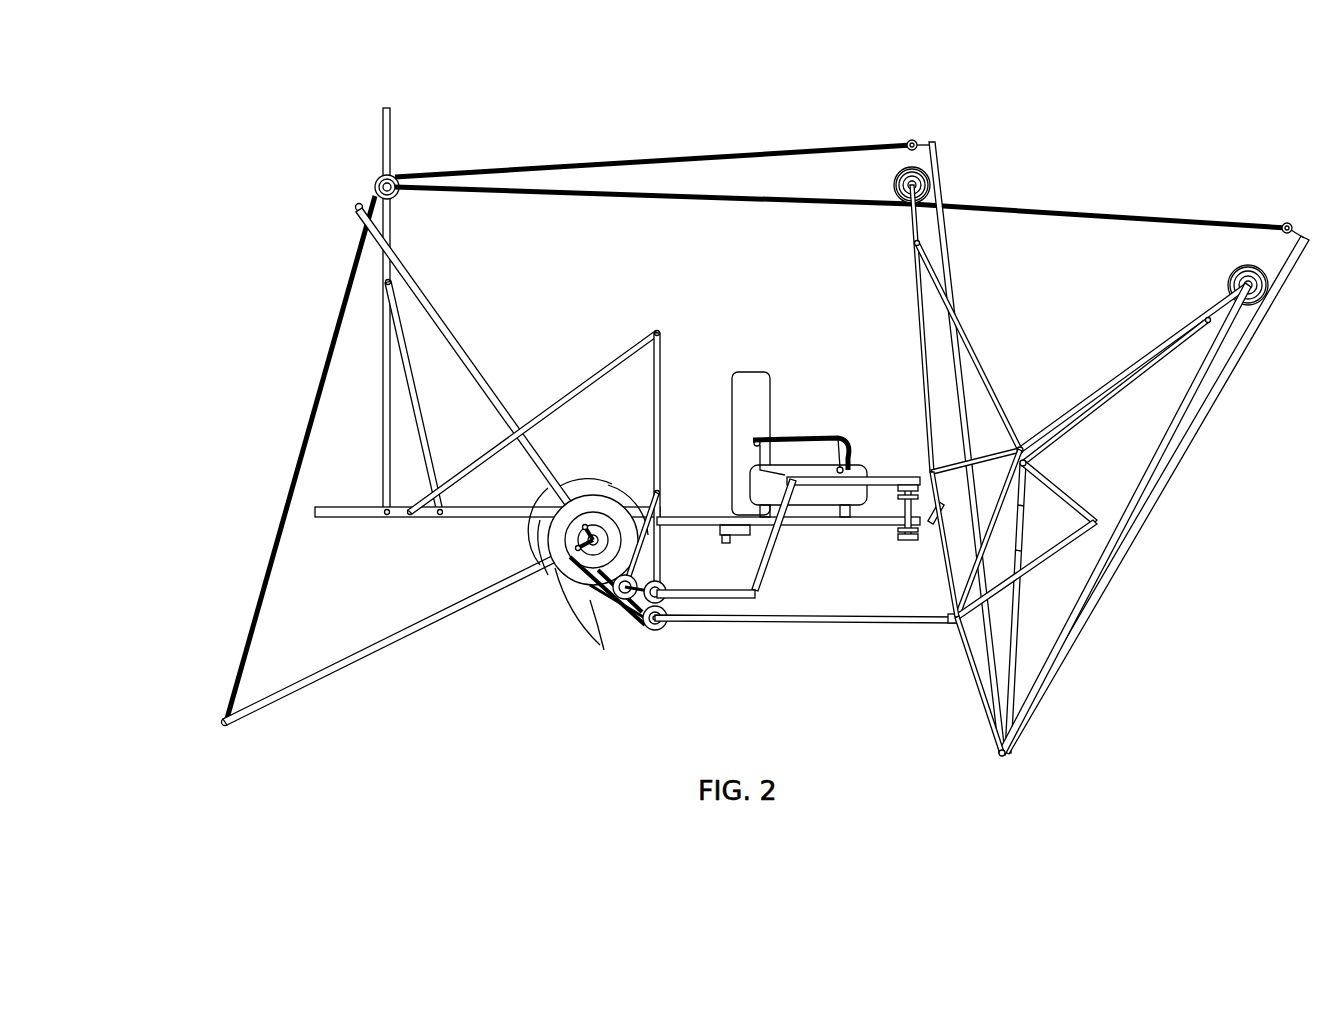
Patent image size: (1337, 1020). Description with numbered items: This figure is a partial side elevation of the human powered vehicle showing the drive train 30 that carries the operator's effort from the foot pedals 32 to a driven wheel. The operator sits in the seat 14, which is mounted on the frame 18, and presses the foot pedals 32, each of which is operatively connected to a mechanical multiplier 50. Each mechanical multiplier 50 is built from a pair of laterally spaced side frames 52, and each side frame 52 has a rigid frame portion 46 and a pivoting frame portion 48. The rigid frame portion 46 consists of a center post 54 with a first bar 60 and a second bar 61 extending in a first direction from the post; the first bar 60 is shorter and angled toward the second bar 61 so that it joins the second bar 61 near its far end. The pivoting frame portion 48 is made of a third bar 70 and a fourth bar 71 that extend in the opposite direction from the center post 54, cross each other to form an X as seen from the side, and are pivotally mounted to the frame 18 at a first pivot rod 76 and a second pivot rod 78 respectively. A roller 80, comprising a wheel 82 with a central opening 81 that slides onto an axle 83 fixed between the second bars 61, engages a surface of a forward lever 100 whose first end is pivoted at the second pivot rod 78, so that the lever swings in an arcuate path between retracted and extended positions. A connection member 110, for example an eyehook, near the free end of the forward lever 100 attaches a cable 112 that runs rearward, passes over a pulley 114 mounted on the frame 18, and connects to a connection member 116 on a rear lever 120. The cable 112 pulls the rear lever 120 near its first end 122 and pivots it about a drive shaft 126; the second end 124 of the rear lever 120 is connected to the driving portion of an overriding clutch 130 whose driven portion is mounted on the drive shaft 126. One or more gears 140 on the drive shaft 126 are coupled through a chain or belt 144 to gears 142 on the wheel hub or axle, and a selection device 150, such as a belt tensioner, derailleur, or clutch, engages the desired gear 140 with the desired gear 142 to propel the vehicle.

The seat 14 is at (745, 370).
The frame 18 is at (800, 624).
The drive train 30 is at (1078, 138).
The foot pedal 32 is at (938, 528).
The rigid frame portion 46 is at (985, 345).
The pivoting frame portion 48 is at (945, 563).
The mechanical multiplier 50 is at (908, 353).
The side frame 52 is at (1032, 455).
The center post 54 is at (992, 446).
The first bar 60 is at (988, 395).
The second bar 61 is at (926, 428).
The third bar 70 is at (998, 520).
The fourth bar 71 is at (950, 580).
The first pivot rod 76 is at (956, 628).
The second pivot rod 78 is at (1002, 760).
The roller 80 is at (895, 186).
The opening 81 is at (928, 182).
The wheel 82 is at (940, 155).
The axle 83 is at (926, 190).
The forward lever 100 is at (952, 266).
The connection member 110 is at (918, 140).
The cable 112 is at (660, 135).
The pulley 114 is at (378, 182).
The connection member 116 is at (353, 210).
The rear lever 120 is at (462, 342).
The first end 122 is at (355, 205).
The second end 124 is at (590, 528).
The drive shaft 126 is at (605, 535).
The overriding clutch 130 is at (575, 546).
The gear 140 is at (560, 507).
The gear 142 is at (655, 632).
The chain or belt 144 is at (618, 605).
The selection device 150 is at (640, 572).